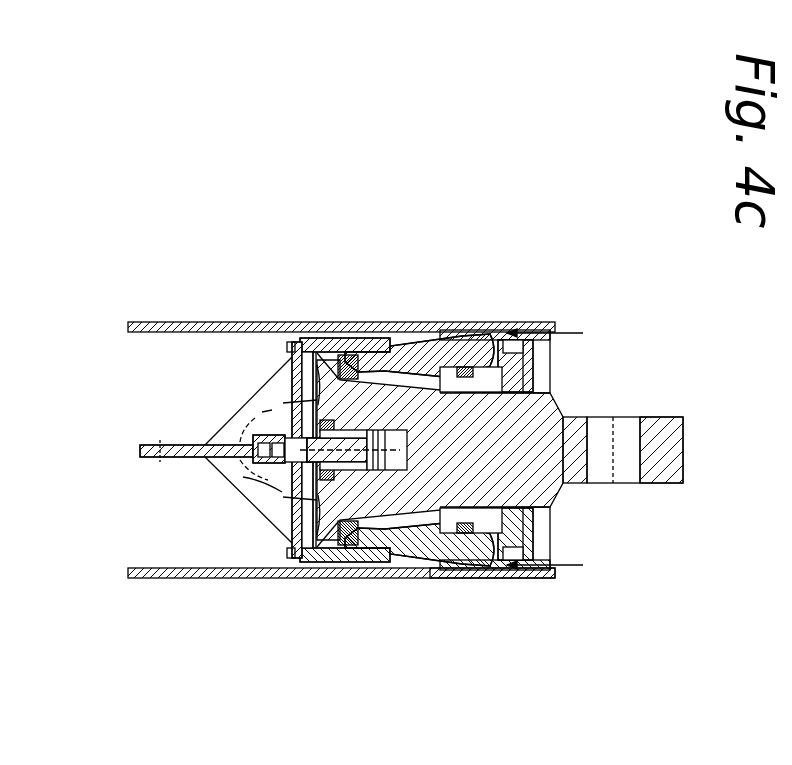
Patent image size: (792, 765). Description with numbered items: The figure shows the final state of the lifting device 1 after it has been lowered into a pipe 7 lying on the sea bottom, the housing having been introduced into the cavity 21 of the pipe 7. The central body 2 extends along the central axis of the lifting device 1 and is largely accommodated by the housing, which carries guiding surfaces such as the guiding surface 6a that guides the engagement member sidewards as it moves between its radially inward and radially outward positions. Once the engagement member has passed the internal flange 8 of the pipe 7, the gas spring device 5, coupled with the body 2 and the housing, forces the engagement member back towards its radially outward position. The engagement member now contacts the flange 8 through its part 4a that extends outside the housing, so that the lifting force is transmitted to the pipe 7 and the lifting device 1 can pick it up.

The lifting device 1 is at (653, 587).
The central body 2 is at (523, 465).
The part of the engagement member 4a is at (497, 550).
The gas spring device 5 is at (256, 492).
The guiding surface 6a is at (443, 572).
The pipe 7 is at (331, 579).
The internal flange 8 is at (524, 330).
The cavity 21 is at (230, 547).